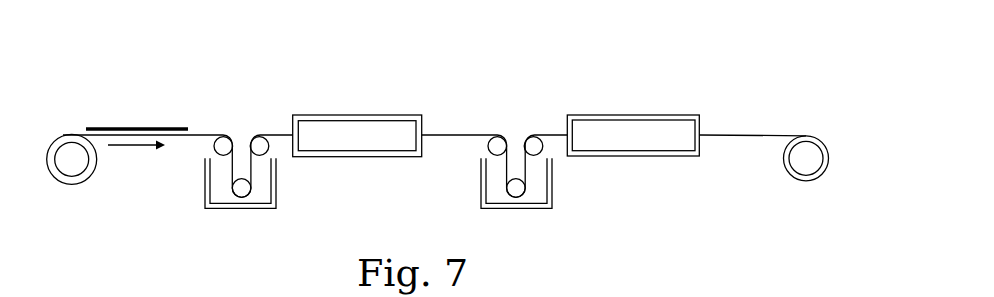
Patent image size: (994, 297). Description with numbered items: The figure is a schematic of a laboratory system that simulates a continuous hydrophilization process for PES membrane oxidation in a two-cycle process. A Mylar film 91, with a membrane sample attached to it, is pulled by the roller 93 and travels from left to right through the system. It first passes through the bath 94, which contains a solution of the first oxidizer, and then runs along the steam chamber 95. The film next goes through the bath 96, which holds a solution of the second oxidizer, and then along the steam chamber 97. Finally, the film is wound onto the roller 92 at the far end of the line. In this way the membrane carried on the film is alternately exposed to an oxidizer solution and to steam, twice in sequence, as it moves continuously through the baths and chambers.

The Mylar film 91 is at (440, 136).
The roller 92 is at (805, 163).
The roller 93 is at (242, 188).
The bath 94 is at (266, 190).
The steam chamber 95 is at (358, 113).
The bath 96 is at (534, 199).
The steam chamber 97 is at (625, 113).